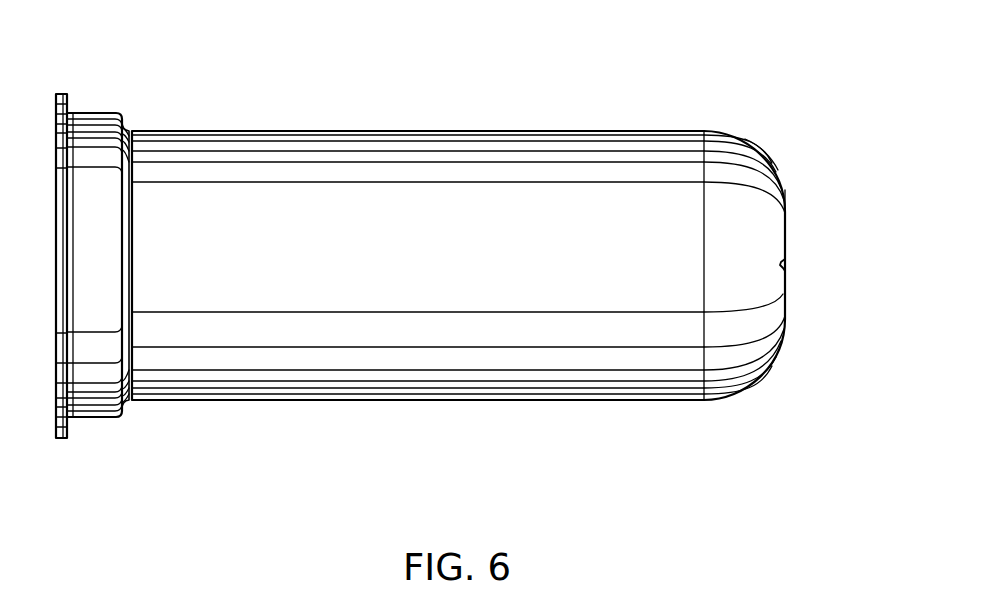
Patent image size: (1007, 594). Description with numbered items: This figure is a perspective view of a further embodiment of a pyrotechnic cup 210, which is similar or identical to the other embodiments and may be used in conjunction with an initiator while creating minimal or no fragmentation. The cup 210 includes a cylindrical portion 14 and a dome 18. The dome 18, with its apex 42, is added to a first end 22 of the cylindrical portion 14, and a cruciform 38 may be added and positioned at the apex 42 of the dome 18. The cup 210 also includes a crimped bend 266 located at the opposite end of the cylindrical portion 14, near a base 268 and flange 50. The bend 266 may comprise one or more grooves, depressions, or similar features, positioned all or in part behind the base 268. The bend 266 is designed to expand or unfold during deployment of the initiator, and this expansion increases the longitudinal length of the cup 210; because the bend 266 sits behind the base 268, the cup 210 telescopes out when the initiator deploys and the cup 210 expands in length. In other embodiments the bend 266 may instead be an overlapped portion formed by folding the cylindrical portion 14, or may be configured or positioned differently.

The cylindrical portion 14 is at (407, 158).
The dome 18 is at (728, 160).
The first end 22 is at (765, 158).
The cruciform 38 is at (786, 196).
The apex 42 is at (787, 263).
The flange 50 is at (65, 99).
The pyrotechnic cup 210 is at (349, 406).
The crimped bend 266 is at (133, 123).
The base 268 is at (92, 405).